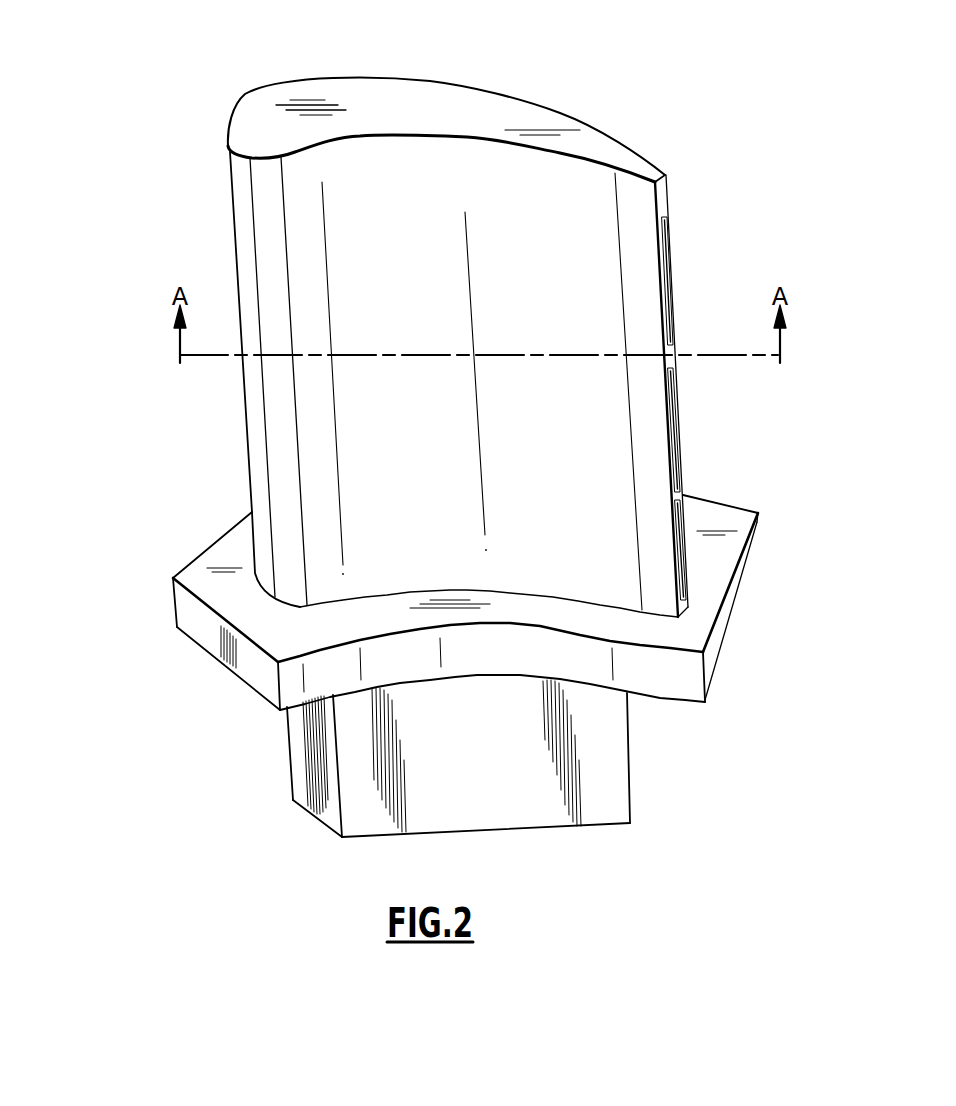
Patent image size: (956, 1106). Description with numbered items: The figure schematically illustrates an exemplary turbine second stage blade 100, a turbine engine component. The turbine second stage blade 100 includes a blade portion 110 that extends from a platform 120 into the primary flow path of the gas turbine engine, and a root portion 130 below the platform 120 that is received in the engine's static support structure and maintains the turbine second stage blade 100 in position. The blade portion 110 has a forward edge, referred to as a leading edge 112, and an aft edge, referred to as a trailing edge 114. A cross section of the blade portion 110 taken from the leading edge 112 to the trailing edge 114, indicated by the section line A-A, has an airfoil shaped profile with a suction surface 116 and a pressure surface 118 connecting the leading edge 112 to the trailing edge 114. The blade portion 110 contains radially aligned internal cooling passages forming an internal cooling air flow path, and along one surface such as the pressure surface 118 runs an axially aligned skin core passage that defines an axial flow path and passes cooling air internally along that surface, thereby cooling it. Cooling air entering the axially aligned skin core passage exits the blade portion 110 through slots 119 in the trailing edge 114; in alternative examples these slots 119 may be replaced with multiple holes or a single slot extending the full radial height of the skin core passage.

The turbine second stage blade 100 is at (435, 424).
The blade portion 110 is at (533, 188).
The leading edge 112 is at (233, 207).
The trailing edge 114 is at (673, 268).
The suction surface 116 is at (418, 80).
The pressure surface 118 is at (430, 138).
The slots 119 is at (673, 332).
The platform 120 is at (708, 577).
The root portion 130 is at (603, 795).